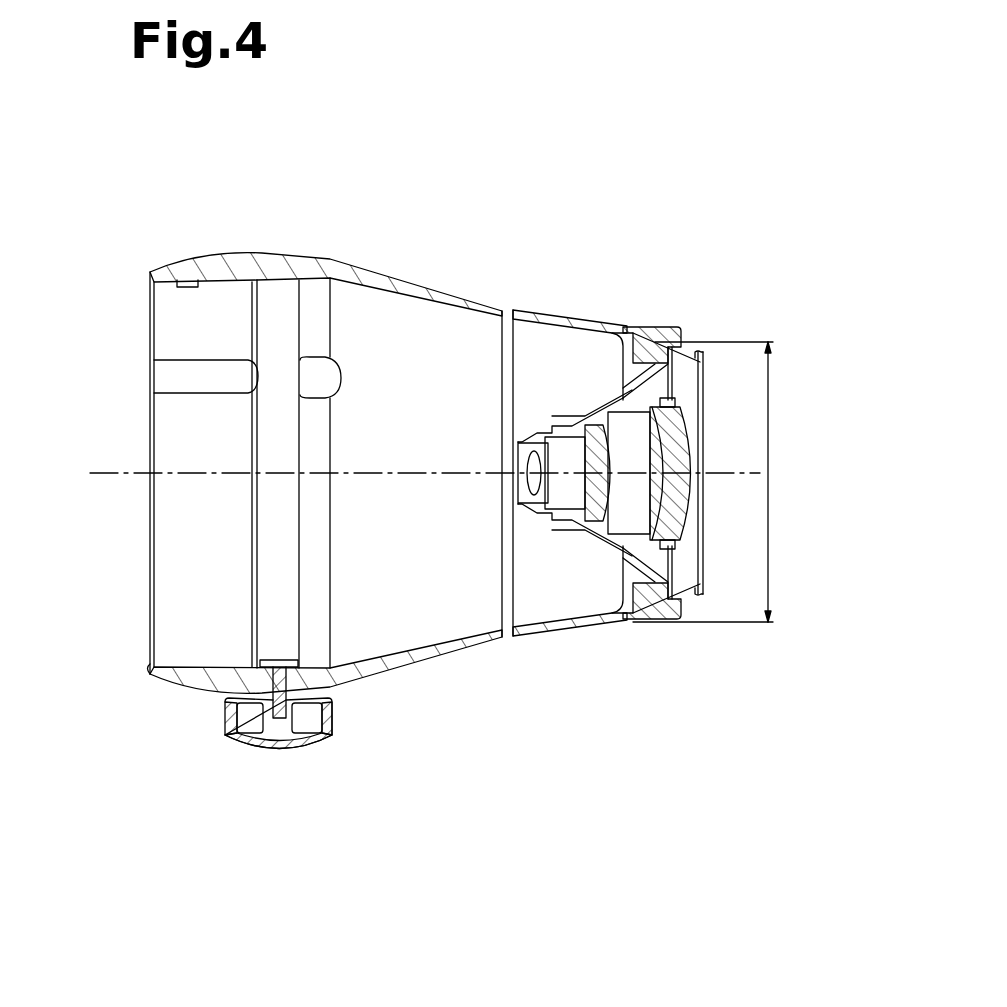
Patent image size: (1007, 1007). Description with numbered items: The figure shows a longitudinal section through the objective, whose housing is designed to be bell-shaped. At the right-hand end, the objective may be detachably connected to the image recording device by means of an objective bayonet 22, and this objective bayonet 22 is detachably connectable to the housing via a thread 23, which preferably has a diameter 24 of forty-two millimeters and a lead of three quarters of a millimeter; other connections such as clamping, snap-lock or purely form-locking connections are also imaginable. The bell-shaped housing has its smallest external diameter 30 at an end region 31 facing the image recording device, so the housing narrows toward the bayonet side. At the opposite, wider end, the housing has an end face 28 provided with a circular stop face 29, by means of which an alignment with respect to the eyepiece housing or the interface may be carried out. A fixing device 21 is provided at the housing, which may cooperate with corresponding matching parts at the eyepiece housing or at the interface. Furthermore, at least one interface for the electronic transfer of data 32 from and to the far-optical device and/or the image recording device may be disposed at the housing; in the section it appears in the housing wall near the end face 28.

The fixing device 21 is at (235, 753).
The objective bayonet 22 is at (695, 340).
The thread 23 is at (660, 343).
The diameter 24 is at (633, 361).
The end face 28 is at (132, 292).
The circular stop face 29 is at (150, 670).
The smallest external diameter 30 is at (770, 573).
The end region 31 is at (637, 647).
The interface for the electronic transfer of data 32 is at (183, 280).